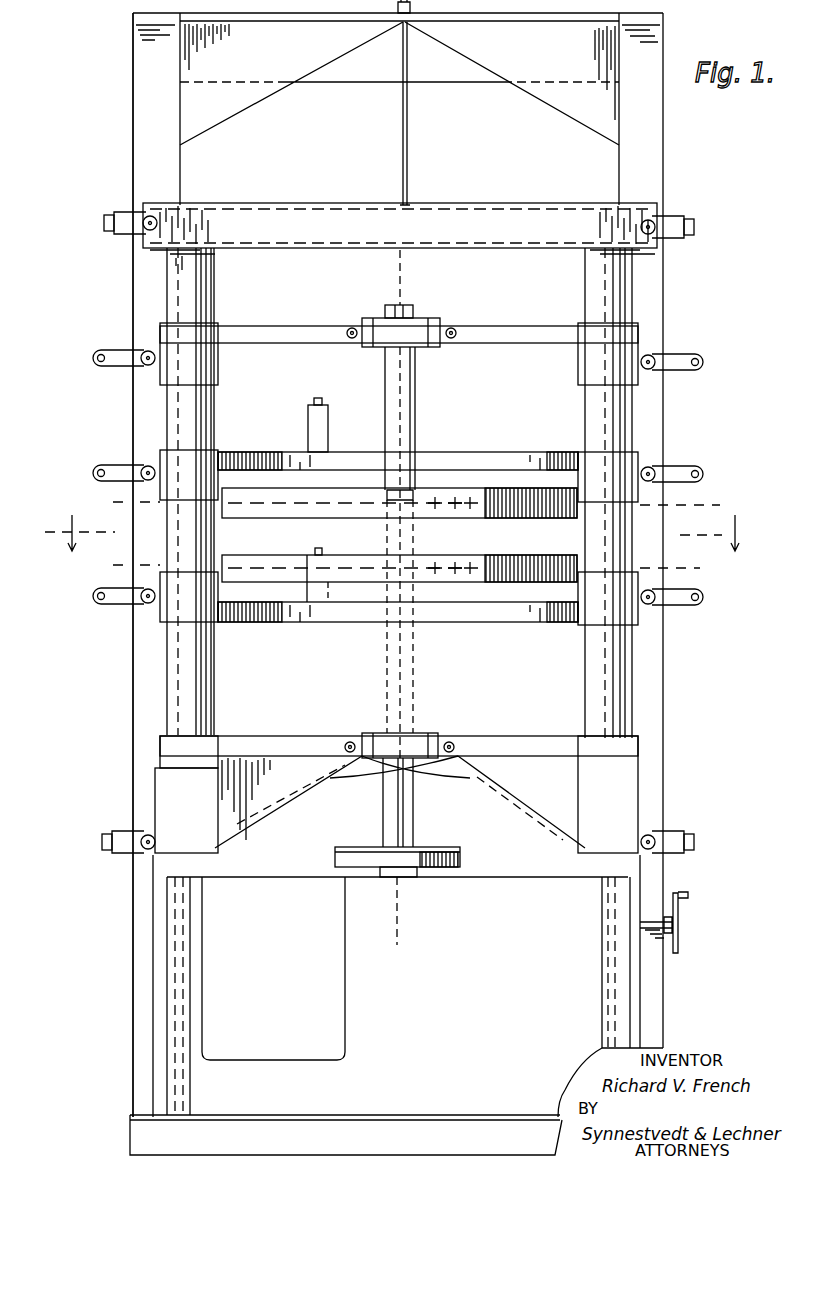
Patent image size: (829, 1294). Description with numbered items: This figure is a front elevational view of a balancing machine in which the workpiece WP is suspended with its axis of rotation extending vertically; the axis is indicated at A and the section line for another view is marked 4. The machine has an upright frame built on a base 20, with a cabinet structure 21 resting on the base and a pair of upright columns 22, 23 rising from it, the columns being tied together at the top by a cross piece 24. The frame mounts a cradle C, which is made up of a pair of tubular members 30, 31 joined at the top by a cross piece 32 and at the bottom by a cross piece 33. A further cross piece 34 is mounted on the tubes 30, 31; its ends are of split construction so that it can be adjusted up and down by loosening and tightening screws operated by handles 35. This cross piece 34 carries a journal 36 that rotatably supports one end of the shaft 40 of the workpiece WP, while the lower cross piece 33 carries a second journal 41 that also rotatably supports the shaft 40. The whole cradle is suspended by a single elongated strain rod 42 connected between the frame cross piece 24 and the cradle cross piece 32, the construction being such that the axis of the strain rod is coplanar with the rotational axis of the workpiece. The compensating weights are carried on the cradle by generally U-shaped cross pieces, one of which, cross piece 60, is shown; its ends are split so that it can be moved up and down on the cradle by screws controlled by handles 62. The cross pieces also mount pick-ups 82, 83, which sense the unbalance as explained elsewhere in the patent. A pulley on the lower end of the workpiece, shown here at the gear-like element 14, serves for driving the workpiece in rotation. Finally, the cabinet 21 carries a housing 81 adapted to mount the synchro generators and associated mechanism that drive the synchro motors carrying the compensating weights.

The gear 14 is at (430, 847).
The base 20 is at (346, 1148).
The cabinet structure 21 is at (470, 1037).
The upright column 22 is at (145, 756).
The upright column 23 is at (646, 759).
The cross piece 24 is at (282, 68).
The tubular member 30 is at (208, 700).
The tubular member 31 is at (590, 700).
The cross piece 32 is at (343, 237).
The cross piece 33 is at (308, 742).
The cross piece 34 is at (503, 327).
The handle 35 is at (112, 334).
The journal 36 is at (430, 316).
The shaft 40 is at (415, 415).
The journal 41 is at (415, 733).
The strain rod 42 is at (408, 166).
The cross piece 60 is at (282, 432).
The handle 62 is at (100, 470).
The housing 81 is at (277, 973).
The pick-up 82 is at (328, 440).
The pick-up 83 is at (348, 545).
The section line 4- 4 is at (62, 533).
The cradle C is at (222, 398).
The axis A is at (424, 910).
The workpiece WP is at (473, 487).